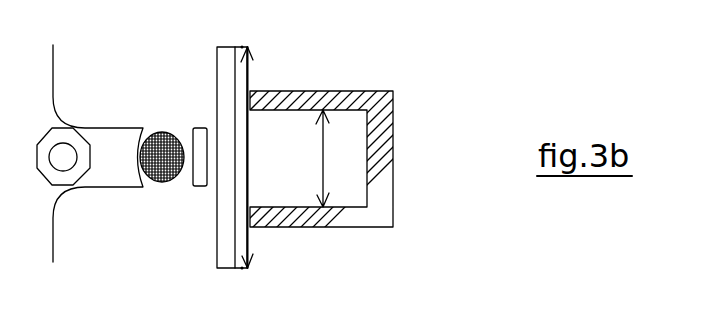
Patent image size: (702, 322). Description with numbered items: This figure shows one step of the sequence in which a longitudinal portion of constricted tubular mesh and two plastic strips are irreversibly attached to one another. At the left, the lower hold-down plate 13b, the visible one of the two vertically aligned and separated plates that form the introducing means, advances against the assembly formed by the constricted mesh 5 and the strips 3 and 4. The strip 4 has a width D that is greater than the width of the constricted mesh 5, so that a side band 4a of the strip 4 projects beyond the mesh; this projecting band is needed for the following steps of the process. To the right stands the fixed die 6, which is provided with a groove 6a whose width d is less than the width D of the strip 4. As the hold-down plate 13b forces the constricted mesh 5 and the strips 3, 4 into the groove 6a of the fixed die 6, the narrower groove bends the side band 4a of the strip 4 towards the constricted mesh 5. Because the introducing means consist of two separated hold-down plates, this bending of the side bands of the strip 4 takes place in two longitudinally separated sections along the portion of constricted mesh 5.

The lower hold-down plate 13b is at (108, 128).
The constricted mesh 5 is at (161, 132).
The strip 3 is at (199, 185).
The strip 4 is at (218, 259).
The side band 4a is at (322, 314).
The fixed die 6 is at (390, 92).
The groove 6a is at (345, 127).
The width of the strip D is at (256, 157).
The width of the groove d is at (330, 158).